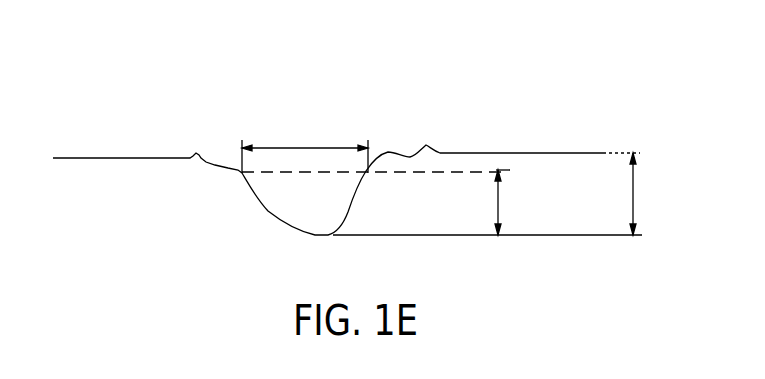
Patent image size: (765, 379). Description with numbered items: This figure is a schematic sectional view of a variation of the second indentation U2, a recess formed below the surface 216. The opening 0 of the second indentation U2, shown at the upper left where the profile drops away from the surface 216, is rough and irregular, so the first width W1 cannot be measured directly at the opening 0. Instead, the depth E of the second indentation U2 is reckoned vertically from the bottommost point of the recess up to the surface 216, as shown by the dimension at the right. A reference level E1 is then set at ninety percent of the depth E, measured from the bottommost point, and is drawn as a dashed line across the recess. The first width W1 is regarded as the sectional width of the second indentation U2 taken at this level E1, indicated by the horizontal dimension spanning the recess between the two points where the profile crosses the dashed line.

The surface 216 is at (549, 153).
The first width W1 is at (305, 148).
The sectional depth level E1 is at (512, 202).
The depth E is at (640, 194).
The second indentation U2 is at (273, 112).
The opening 0 is at (232, 152).